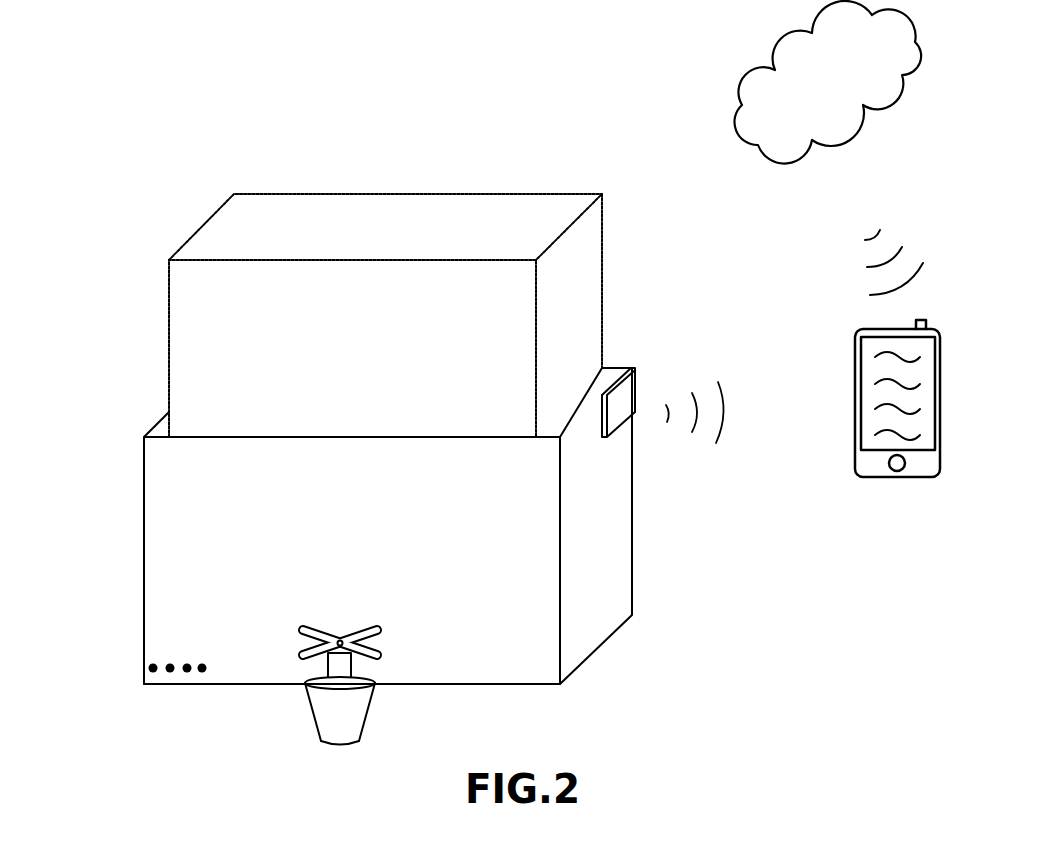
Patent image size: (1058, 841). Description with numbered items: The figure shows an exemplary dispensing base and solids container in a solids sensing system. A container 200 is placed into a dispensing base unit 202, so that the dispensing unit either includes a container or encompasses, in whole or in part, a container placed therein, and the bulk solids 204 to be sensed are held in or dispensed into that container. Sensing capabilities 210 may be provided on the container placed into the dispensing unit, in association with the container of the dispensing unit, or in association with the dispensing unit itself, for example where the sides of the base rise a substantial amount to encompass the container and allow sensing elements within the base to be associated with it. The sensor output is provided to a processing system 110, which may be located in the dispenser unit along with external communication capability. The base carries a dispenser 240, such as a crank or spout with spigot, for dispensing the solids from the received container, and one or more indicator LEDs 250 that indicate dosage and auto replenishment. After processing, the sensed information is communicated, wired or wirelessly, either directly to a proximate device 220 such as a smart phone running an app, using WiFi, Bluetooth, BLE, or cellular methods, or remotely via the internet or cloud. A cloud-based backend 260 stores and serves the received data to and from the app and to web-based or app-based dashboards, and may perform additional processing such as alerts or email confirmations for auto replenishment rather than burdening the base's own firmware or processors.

The processing system 110 is at (635, 374).
The container 200 is at (538, 261).
The dispensing base unit 202 is at (632, 507).
The bulk solids 204 is at (145, 528).
The sensing capabilities 210 is at (207, 455).
The proximate device 220 is at (897, 478).
The dispenser 240 is at (370, 700).
The indicator LEDs 250 is at (145, 668).
The cloud-based backend 260 is at (857, 123).